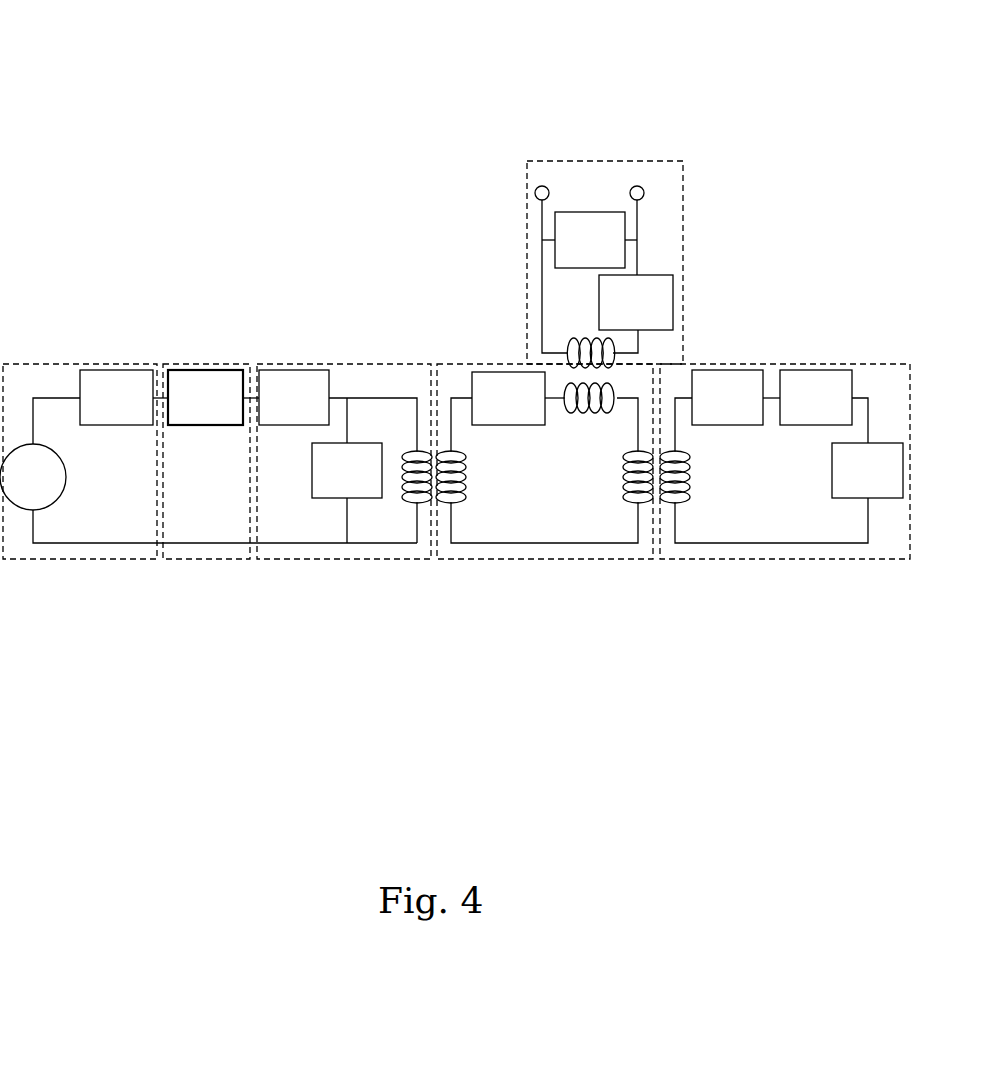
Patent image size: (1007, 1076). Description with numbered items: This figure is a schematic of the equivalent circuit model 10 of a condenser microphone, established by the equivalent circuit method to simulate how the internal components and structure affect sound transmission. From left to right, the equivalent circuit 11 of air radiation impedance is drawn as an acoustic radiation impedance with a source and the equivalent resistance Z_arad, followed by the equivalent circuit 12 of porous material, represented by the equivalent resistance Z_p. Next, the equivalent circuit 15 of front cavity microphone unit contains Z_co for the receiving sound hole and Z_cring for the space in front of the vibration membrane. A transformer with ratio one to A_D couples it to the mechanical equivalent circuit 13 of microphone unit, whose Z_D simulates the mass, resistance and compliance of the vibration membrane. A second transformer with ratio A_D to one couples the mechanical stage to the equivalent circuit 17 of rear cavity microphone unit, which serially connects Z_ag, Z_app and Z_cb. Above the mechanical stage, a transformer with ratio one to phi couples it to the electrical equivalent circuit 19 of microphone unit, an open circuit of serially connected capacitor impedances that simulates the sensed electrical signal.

The equivalent circuit model 10 is at (455, 349).
The equivalent circuit of air radiation impedance 11 is at (110, 562).
The equivalent circuit of porous material 12 is at (205, 562).
The equivalent circuit of front cavity microphone unit 15 is at (347, 562).
The mechanical equivalent circuit of microphone unit 13 is at (556, 559).
The equivalent circuit of rear cavity microphone unit 17 is at (797, 559).
The electrical equivalent circuit of microphone unit 19 is at (603, 160).